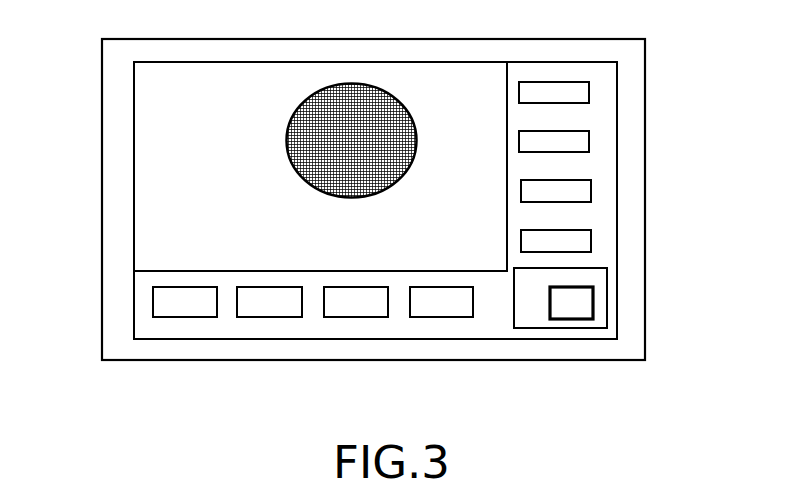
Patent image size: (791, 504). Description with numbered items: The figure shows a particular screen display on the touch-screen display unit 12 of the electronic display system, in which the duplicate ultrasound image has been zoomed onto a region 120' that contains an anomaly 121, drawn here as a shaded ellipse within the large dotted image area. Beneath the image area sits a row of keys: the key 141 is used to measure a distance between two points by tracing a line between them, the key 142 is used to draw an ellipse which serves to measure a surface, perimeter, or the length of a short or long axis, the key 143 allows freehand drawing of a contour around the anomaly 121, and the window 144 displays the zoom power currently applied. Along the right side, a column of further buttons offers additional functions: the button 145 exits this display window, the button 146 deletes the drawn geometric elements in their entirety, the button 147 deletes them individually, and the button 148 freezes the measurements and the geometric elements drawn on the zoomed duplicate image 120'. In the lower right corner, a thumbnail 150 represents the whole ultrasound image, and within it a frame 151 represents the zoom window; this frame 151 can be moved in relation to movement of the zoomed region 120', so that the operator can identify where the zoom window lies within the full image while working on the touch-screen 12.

The touch-screen display unit 12 is at (630, 62).
The zoomed region 120' is at (338, 200).
The anomaly 121 is at (370, 155).
The distance measurement key 141 is at (188, 313).
The ellipse drawing key 142 is at (271, 313).
The freehand drawing key 143 is at (357, 313).
The zoom power window 144 is at (457, 311).
The exit button 145 is at (585, 95).
The delete all button 146 is at (585, 143).
The delete button 147 is at (587, 193).
The end button 148 is at (585, 243).
The thumbnail 150 is at (600, 274).
The frame 151 is at (590, 304).